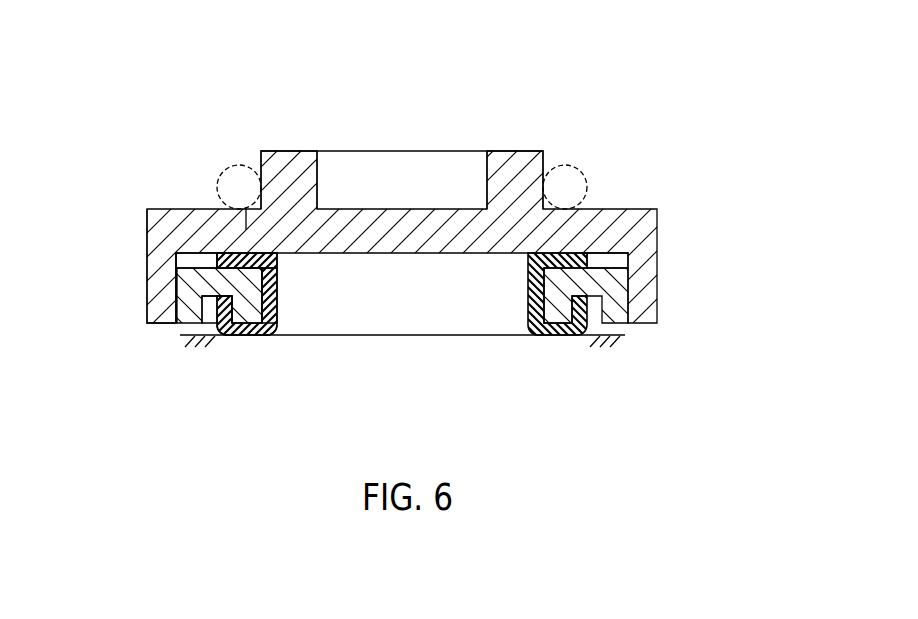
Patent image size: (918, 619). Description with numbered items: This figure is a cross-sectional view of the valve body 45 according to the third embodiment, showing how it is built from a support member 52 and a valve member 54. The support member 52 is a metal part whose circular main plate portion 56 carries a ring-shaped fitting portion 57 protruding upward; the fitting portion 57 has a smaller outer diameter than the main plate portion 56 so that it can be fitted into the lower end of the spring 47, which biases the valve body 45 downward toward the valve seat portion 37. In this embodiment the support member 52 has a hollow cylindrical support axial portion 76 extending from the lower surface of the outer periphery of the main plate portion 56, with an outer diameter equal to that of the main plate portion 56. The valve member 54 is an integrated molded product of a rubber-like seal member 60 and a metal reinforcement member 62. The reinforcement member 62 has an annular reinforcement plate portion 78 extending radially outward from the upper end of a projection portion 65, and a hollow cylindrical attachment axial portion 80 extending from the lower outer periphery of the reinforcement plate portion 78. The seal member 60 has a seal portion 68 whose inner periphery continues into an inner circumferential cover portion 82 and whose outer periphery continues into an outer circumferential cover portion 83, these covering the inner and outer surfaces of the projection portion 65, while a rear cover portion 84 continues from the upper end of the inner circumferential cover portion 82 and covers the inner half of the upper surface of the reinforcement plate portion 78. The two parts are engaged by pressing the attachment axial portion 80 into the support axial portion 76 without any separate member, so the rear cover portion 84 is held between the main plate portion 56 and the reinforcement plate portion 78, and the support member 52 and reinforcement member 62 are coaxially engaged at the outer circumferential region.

The valve seat portion 37 is at (618, 340).
The valve body 45 is at (540, 100).
The spring 47 is at (575, 165).
The support member 52 is at (660, 230).
The valve member 54 is at (616, 256).
The main plate portion 56 is at (208, 228).
The fitting portion 57 is at (285, 168).
The seal member 60 is at (542, 338).
The reinforcement member 62 is at (632, 276).
The projection portion 65 is at (237, 313).
The seal portion 68 is at (255, 337).
The support axial portion 76 is at (157, 293).
The reinforcement plate portion 78 is at (197, 265).
The attachment axial portion 80 is at (188, 308).
The inner circumferential cover portion 82 is at (272, 306).
The outer circumferential cover portion 83 is at (215, 310).
The rear cover portion 84 is at (238, 260).